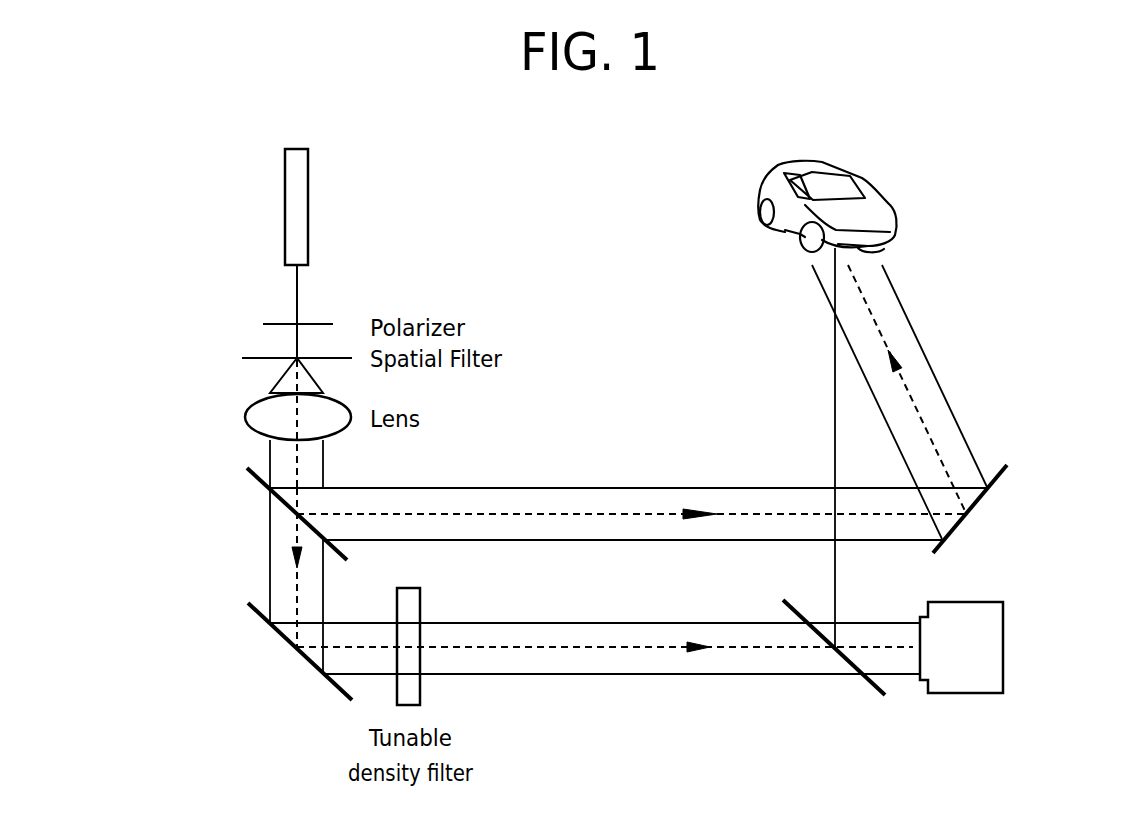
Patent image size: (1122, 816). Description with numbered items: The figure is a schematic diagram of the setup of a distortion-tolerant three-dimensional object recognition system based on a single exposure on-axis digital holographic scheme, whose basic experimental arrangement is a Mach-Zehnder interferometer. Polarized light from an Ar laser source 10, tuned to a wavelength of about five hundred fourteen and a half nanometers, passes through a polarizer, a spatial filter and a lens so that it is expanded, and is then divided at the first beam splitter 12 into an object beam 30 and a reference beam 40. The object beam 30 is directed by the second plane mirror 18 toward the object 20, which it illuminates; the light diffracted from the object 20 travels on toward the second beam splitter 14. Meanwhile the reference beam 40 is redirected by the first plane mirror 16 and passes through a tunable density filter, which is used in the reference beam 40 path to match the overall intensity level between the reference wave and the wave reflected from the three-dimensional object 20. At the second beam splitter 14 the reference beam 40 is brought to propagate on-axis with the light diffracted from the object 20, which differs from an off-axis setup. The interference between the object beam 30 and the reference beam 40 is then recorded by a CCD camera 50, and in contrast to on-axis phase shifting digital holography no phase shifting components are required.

The Ar laser source 10 is at (285, 232).
The beam splitter 12 is at (190, 514).
The beam splitter 14 is at (845, 718).
The plane mirror 16 is at (240, 660).
The plane mirror 18 is at (1015, 538).
The object 20 is at (838, 163).
The object beam 30 is at (508, 514).
The reference beam 40 is at (295, 593).
The CCD camera 50 is at (1003, 648).